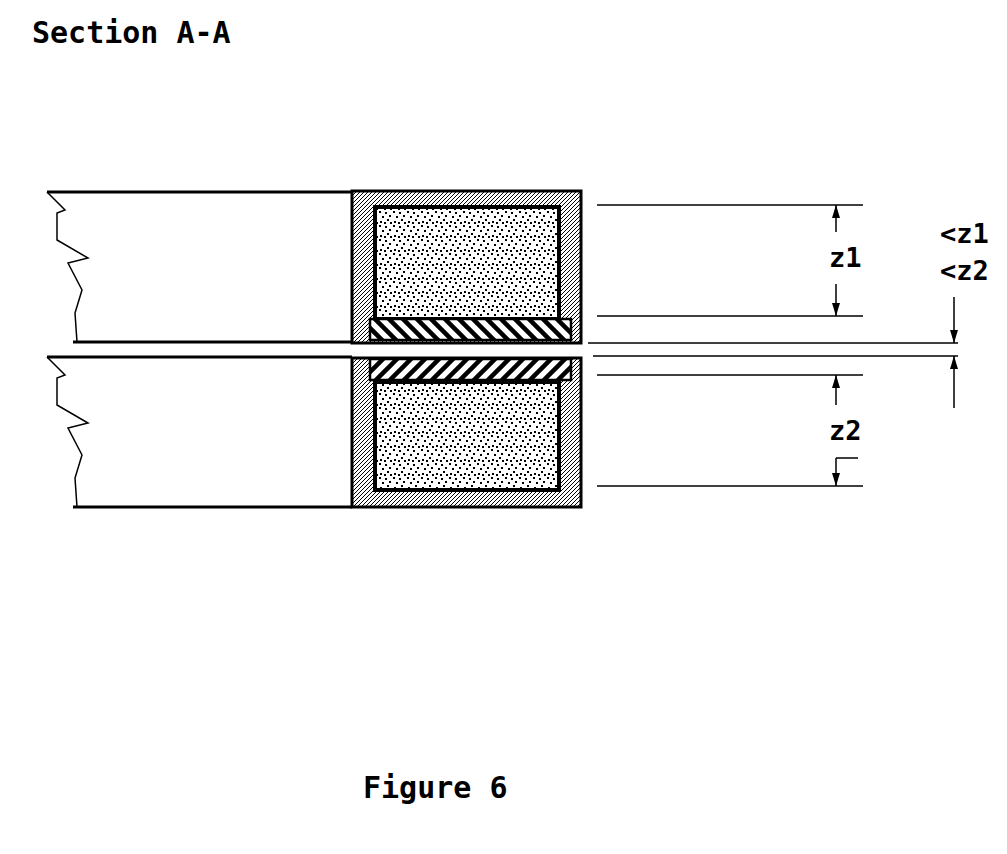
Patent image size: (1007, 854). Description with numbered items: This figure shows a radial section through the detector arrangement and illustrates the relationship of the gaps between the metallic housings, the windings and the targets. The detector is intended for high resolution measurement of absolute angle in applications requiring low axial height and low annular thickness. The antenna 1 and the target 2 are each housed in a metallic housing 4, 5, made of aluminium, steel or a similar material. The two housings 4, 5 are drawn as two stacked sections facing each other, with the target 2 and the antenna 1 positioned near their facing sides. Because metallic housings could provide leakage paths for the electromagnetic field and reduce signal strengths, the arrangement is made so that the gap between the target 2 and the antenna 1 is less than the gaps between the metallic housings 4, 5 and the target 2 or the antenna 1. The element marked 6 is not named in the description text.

The antenna 1 is at (418, 343).
The target 2 is at (538, 373).
The metallic housing 4 is at (351, 392).
The metallic housing 5 is at (396, 191).
The filling material 6 is at (495, 252).